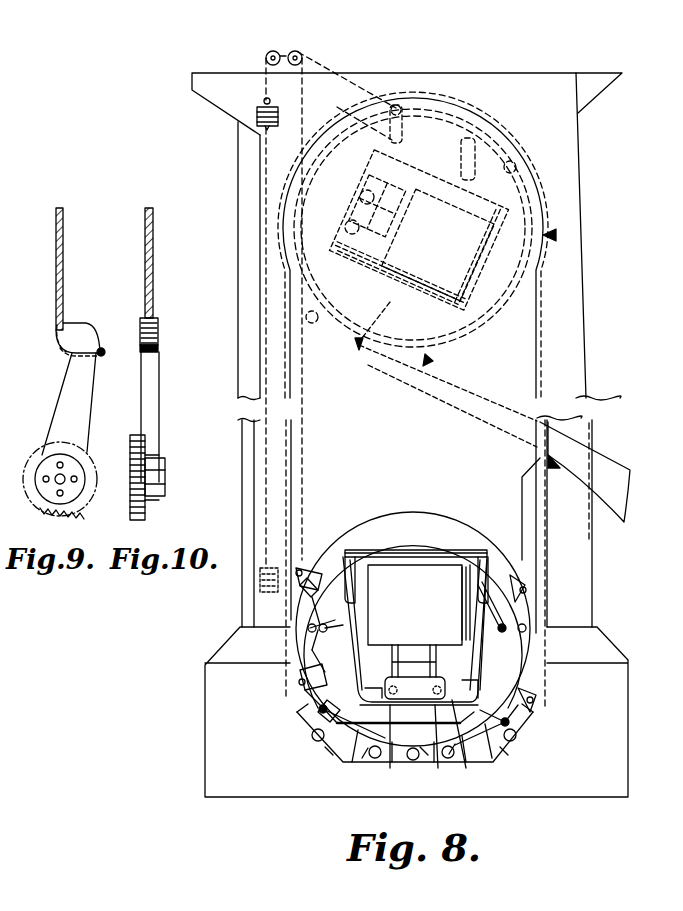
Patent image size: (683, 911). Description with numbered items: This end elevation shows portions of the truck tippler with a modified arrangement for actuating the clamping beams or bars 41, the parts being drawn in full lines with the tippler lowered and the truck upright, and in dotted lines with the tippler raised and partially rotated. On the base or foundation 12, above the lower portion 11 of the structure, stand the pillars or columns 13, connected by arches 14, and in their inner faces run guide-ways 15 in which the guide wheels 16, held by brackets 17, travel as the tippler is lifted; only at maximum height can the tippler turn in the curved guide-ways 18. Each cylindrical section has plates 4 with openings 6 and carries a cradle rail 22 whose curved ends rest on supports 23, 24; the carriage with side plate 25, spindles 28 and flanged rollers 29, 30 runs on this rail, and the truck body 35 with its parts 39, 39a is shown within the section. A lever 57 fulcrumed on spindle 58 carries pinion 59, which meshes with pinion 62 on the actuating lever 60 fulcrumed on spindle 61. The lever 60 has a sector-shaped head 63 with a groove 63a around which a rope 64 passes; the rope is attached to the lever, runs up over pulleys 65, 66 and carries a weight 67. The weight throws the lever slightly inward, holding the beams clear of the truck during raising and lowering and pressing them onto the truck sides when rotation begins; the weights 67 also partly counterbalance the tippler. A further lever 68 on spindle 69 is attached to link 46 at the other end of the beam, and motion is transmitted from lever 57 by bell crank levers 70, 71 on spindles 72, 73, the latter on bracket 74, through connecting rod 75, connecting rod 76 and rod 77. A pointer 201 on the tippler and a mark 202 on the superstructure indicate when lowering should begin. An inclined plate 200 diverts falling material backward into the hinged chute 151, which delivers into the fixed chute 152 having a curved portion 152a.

In FIG. 8, the plate 4 is at (416, 540).
In FIG. 8, the opening 6 is at (358, 663).
In FIG. 8, the base rim 11 is at (322, 730).
In FIG. 8, the base or foundation 12 is at (416, 712).
In FIG. 8, the pillars or columns 13 is at (244, 300).
In FIG. 8, the arches 14 is at (399, 78).
In FIG. 8, the guide-ways 15 is at (293, 403).
In FIG. 8, the guide wheels 16 is at (304, 563).
In FIG. 8, the brackets 17 is at (300, 588).
In FIG. 8, the curved guide-ways 18 is at (488, 122).
In FIG. 8, the rail 22 is at (422, 699).
In FIG. 8, the support 23 is at (470, 684).
In FIG. 8, the support 24 is at (382, 693).
In FIG. 8, the side plate 25 is at (415, 672).
In FIG. 8, the spindles 28 is at (437, 745).
In FIG. 8, the flanged roller 29 is at (463, 742).
In FIG. 8, the flanged roller 30 is at (395, 745).
In FIG. 8, the box 35 is at (415, 605).
In FIG. 8, the arm 39 is at (462, 606).
In FIG. 8, the arm 39a is at (470, 629).
In FIG. 8, the clamping beam 41 is at (520, 547).
In FIG. 8, the link 46 is at (338, 548).
In FIG. 8, the lever 57 is at (336, 627).
In FIG. 8, the spindle 58 is at (338, 629).
In FIG. 8, the pinion 59 is at (322, 634).
In FIG. 9, the actuating lever 60 is at (69, 404).
In FIG. 10, the actuating lever 60 is at (160, 423).
In FIG. 8, the actuating lever 60 is at (310, 584).
In FIG. 8, the spindle 61 is at (310, 628).
In FIG. 9, the pinion 62 is at (76, 512).
In FIG. 10, the pinion 62 is at (146, 516).
In FIG. 8, the pinion 62 is at (318, 634).
In FIG. 9, the head or protuberance 63 is at (89, 324).
In FIG. 10, the head or protuberance 63 is at (160, 322).
In FIG. 9, the groove 63a is at (60, 346).
In FIG. 10, the groove 63a is at (159, 336).
In FIG. 9, the rope 64 is at (64, 269).
In FIG. 10, the rope 64 is at (155, 262).
In FIG. 8, the rope 64 is at (304, 110).
In FIG. 8, the pulley 65 is at (298, 50).
In FIG. 8, the pulley 66 is at (272, 50).
In FIG. 8, the weight 67 is at (277, 112).
In FIG. 8, the lever 68 is at (502, 626).
In FIG. 8, the spindle 69 is at (523, 628).
In FIG. 8, the bell crank lever 70 is at (508, 724).
In FIG. 8, the bell crank lever 71 is at (318, 720).
In FIG. 8, the spindle 72 is at (512, 730).
In FIG. 8, the spindle 73 is at (320, 710).
In FIG. 8, the bracket 74 is at (316, 700).
In FIG. 8, the connecting rod 75 is at (338, 680).
In FIG. 8, the connecting rod 76 is at (488, 660).
In FIG. 8, the rod 77 is at (360, 757).
In FIG. 8, the hinged chute 151 is at (520, 480).
In FIG. 8, the fixed chute 152 is at (591, 481).
In FIG. 8, the curved portion 152a is at (556, 458).
In FIG. 8, the inclined plate 200 is at (470, 327).
In FIG. 8, the mark or pointer 201 is at (356, 338).
In FIG. 8, the mark 202 is at (557, 235).